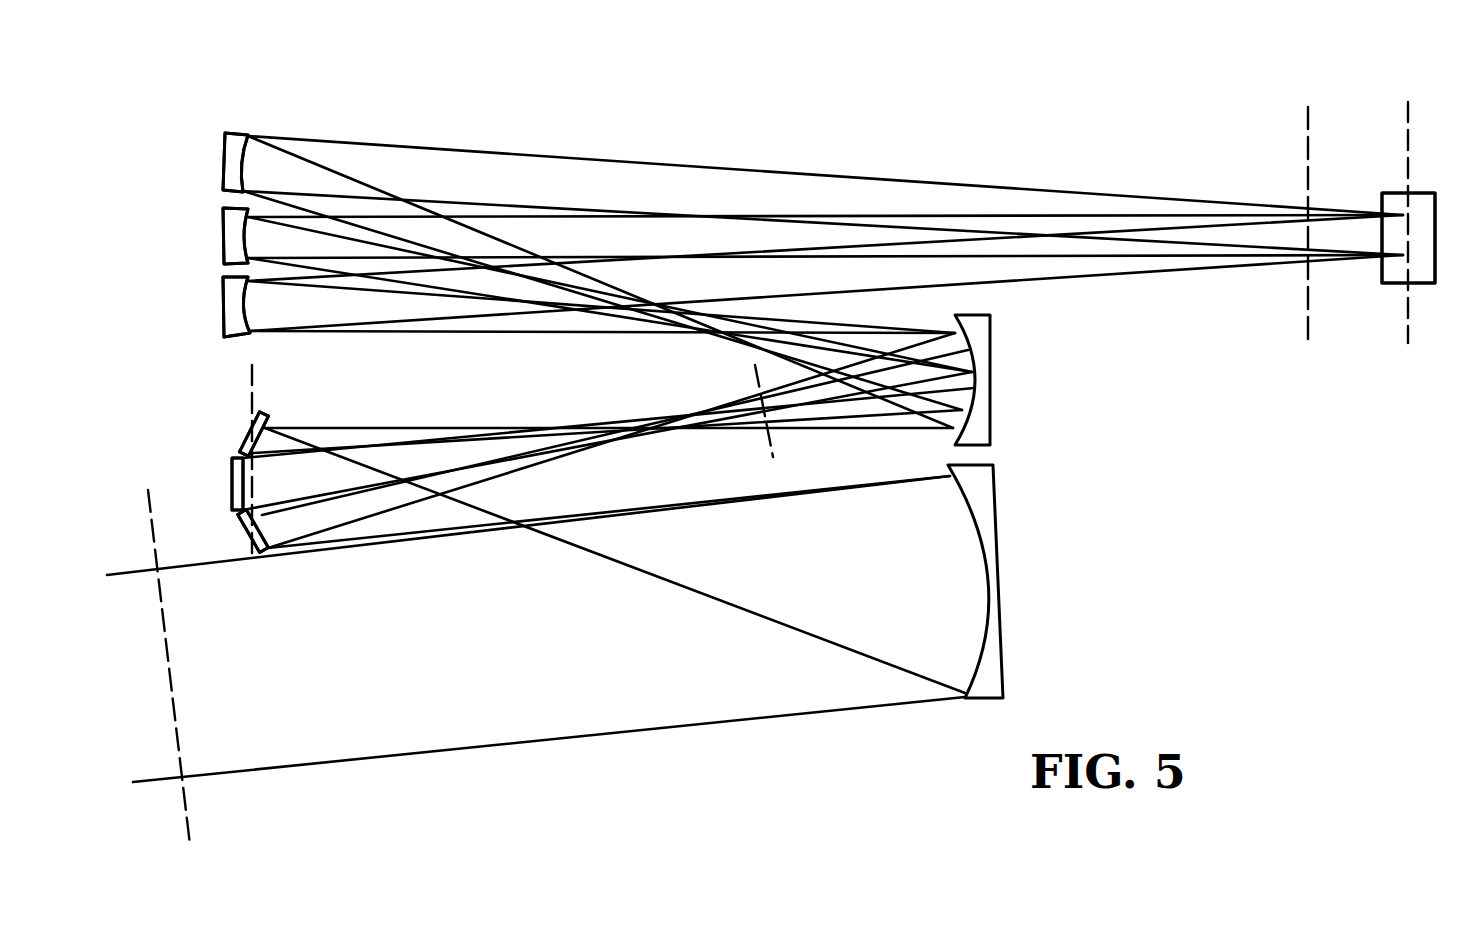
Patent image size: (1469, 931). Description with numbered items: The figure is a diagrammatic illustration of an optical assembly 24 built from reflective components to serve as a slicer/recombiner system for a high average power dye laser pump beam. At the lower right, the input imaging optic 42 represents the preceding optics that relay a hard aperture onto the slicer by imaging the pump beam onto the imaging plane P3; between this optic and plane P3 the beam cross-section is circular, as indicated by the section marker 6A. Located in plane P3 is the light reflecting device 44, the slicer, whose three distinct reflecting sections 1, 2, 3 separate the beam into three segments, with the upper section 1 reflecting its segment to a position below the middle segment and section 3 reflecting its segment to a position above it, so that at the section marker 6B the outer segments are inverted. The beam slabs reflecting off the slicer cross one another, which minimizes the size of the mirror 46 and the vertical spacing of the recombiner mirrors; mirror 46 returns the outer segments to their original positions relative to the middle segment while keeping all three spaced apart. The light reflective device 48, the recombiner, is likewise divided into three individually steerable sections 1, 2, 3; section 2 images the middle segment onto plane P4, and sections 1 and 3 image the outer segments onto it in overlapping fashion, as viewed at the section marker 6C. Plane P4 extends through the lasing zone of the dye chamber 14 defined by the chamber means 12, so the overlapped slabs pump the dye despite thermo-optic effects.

The optical assembly 24 is at (856, 128).
The light reflective device 48 is at (178, 133).
The light reflecting device 44 is at (201, 404).
The section 1 is at (221, 167).
The section 2 is at (223, 243).
The section 3 is at (222, 297).
The mirror 46 is at (993, 373).
The input lens 42 is at (1003, 621).
The means for defining the dye chamber 12 is at (1418, 285).
The dye chamber 14 is at (1418, 237).
The imaging plane P3 is at (256, 386).
The imaging plane P4 is at (1410, 122).
The section view 6A is at (162, 504).
The section view 6B is at (765, 370).
The section view 6C is at (1293, 120).